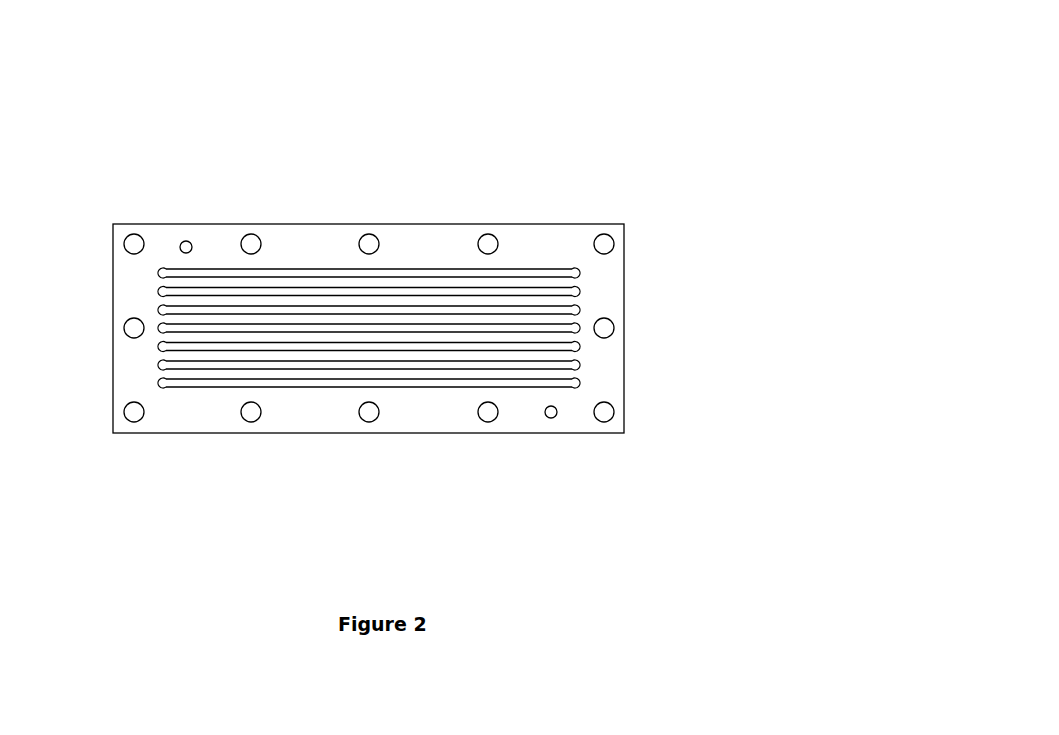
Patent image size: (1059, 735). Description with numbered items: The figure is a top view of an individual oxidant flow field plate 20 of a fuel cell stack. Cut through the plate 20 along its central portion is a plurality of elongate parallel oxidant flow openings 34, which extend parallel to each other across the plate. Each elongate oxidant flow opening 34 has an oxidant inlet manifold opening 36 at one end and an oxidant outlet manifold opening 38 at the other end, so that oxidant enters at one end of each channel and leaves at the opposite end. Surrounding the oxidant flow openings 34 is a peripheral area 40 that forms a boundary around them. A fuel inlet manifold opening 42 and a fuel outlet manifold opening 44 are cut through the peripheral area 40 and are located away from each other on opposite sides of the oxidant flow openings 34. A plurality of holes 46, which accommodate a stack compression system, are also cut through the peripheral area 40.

The oxidant flow field plate 20 is at (664, 67).
The elongate oxidant flow opening 34 is at (523, 272).
The oxidant inlet manifold opening 36 is at (163, 291).
The oxidant outlet manifold opening 38 is at (577, 292).
The peripheral area 40 is at (424, 247).
The fuel inlet manifold opening 42 is at (183, 242).
The fuel outlet manifold opening 44 is at (553, 415).
The holes 46 is at (253, 238).